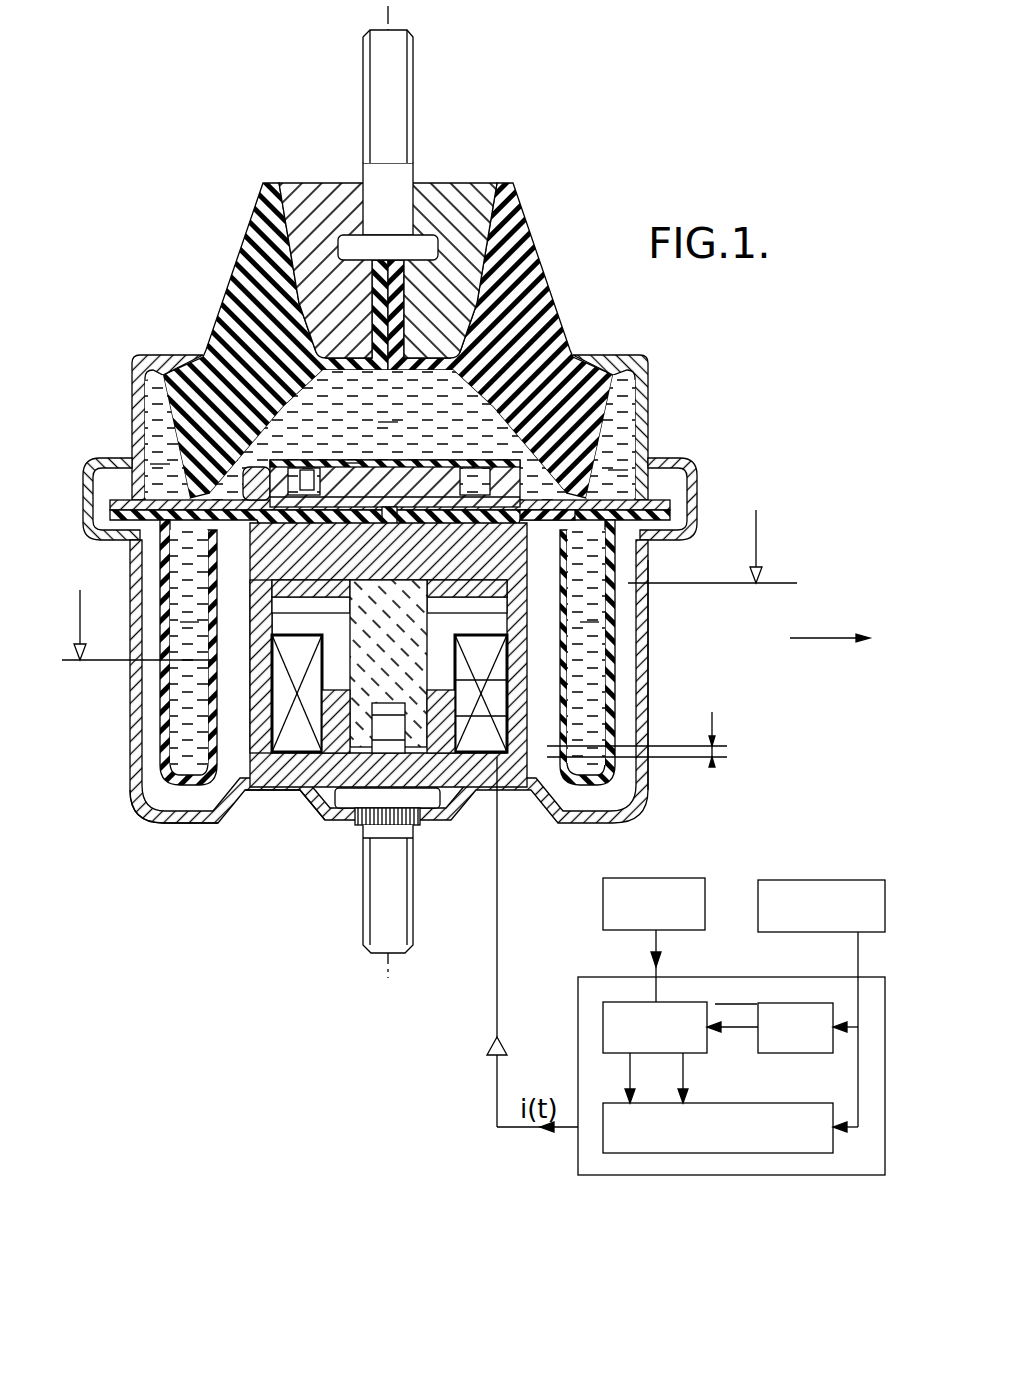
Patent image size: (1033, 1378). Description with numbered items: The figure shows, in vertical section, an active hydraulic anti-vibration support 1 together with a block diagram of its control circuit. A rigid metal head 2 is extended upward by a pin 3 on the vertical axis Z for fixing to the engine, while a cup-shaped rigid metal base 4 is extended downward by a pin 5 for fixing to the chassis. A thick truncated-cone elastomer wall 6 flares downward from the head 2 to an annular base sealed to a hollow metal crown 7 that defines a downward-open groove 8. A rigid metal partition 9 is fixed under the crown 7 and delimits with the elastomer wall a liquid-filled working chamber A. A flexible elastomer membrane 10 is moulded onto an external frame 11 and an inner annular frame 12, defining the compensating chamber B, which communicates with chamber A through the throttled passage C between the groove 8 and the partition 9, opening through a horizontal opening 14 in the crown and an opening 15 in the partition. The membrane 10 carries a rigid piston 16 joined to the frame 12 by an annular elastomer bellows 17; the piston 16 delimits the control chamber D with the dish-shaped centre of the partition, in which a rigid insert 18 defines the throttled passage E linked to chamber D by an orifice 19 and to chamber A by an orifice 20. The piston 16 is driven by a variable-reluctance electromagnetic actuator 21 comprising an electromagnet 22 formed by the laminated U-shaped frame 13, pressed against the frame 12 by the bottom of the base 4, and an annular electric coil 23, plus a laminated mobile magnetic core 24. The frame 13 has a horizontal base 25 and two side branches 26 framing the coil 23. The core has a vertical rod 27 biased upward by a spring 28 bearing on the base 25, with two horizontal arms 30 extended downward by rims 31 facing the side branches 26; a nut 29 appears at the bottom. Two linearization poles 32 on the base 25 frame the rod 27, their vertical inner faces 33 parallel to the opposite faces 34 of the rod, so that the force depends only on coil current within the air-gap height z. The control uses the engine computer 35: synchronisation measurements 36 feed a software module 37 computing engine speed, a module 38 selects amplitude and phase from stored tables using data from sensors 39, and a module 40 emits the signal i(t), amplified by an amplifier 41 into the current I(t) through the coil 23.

The active hydraulic anti-vibration support 1 is at (476, 490).
The head 2 is at (466, 192).
The pin 3 is at (398, 82).
The base 4 is at (640, 685).
The pin 5 is at (398, 927).
The elastomer wall 6 is at (535, 285).
The crown 7 is at (643, 365).
The groove 8 is at (648, 405).
The partition 9 is at (452, 462).
The flexible elastomer membrane 10 is at (613, 720).
The external frame 11 is at (672, 503).
The inner annular frame 12 is at (522, 520).
The frame 13 is at (566, 603).
The horizontal opening 14 is at (268, 462).
The opening 15 is at (662, 528).
The piston 16 is at (240, 558).
The annular elastomer bellows 17 is at (243, 484).
The rigid insert 18 is at (394, 453).
The orifice 19 is at (477, 488).
The orifice 20 is at (312, 472).
The electromagnetic actuator 21 is at (243, 690).
The electromagnet 22 is at (335, 785).
The electric coil 23 is at (170, 777).
The mobile magnetic core 24 is at (280, 683).
The base 25 is at (488, 778).
The side branches 26 is at (258, 648).
The vertical rod 27 is at (417, 618).
The spring 28 is at (405, 770).
The nut 29 is at (355, 760).
The horizontal arms 30 is at (350, 592).
The rims 31 is at (298, 667).
The linearization poles 32 is at (315, 765).
The vertical inner faces 33 is at (510, 717).
The opposite faces 34 is at (505, 682).
The central processing unit 35 is at (731, 1083).
The set of measurements 36 is at (845, 880).
The software module 37 is at (807, 1057).
The software module 38 is at (693, 1057).
The sensors 39 is at (671, 878).
The module 40 is at (750, 1155).
The amplifier 41 is at (487, 1047).